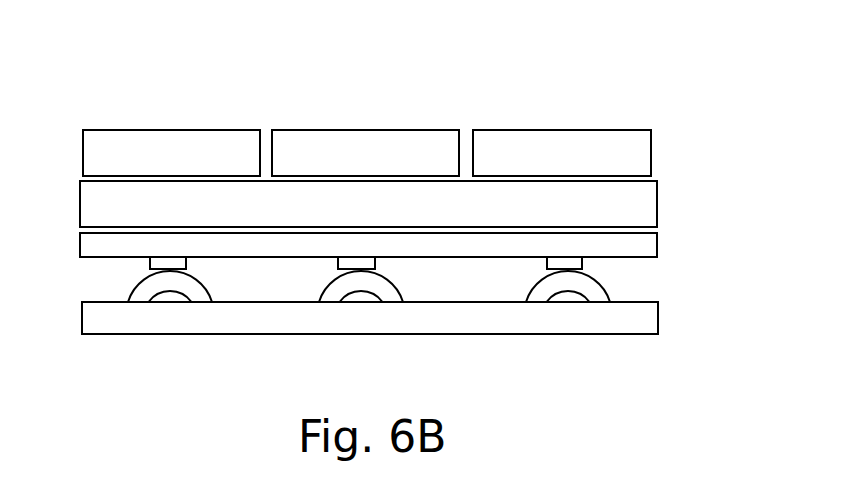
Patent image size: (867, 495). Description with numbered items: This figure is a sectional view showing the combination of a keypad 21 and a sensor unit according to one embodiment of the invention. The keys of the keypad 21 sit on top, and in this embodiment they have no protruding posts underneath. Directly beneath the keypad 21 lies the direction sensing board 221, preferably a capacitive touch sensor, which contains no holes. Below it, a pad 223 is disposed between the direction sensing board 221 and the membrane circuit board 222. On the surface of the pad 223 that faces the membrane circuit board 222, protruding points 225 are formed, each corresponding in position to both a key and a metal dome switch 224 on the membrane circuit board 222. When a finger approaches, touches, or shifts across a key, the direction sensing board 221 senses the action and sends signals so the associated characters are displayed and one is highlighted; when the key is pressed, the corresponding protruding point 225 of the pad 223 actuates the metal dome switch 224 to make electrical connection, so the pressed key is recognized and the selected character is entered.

The keypad 21 is at (157, 130).
The direction sensing board 221 is at (653, 201).
The membrane circuit board 222 is at (597, 321).
The pad 223 is at (657, 247).
The metal dome switch 224 is at (608, 288).
The protruding point 225 is at (583, 260).